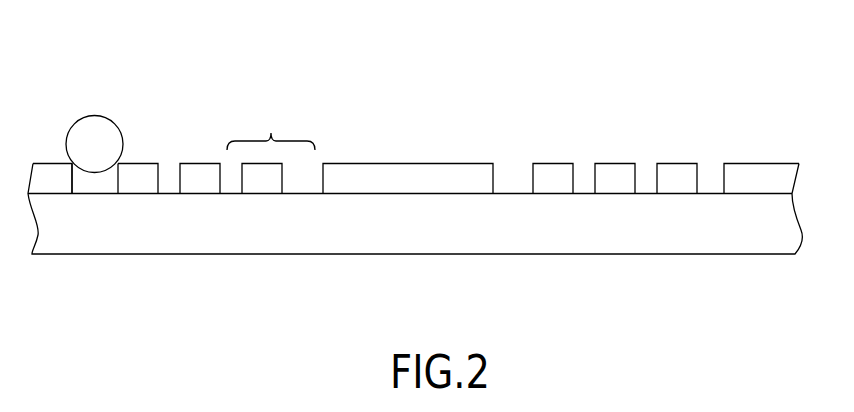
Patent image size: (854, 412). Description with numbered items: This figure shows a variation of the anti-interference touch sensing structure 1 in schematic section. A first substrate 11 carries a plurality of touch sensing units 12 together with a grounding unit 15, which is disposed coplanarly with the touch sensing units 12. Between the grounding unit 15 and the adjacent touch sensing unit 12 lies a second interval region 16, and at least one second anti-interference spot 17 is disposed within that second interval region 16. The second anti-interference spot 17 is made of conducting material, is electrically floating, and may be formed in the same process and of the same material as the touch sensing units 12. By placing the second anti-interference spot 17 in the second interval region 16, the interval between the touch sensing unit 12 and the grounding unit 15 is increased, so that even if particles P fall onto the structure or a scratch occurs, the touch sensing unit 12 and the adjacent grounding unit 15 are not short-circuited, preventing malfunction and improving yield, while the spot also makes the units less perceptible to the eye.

The anti-interference touch sensing structure 1 is at (186, 46).
The first substrate 11 is at (795, 218).
The touch sensing unit 12 is at (62, 163).
The grounding unit 15 is at (203, 163).
The second interval region 16 is at (271, 128).
The second anti-interference spot 17 is at (137, 163).
The particles P is at (92, 121).